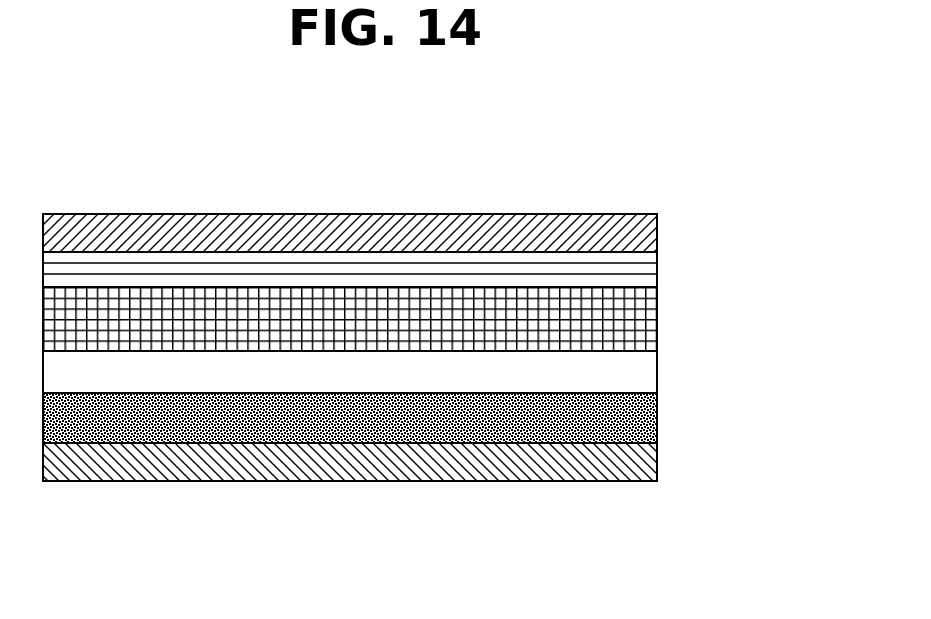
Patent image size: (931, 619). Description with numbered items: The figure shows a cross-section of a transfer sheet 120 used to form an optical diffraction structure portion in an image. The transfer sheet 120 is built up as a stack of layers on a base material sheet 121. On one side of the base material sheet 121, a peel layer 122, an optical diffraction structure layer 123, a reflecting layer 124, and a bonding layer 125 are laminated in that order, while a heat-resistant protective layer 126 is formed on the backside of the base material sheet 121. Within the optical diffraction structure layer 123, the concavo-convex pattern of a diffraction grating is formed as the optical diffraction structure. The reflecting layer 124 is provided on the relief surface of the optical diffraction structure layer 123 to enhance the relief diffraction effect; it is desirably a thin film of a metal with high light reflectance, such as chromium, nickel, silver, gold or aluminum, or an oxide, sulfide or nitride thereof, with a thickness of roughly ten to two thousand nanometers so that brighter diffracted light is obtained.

The transfer sheet 120 is at (111, 160).
The base material sheet 121 is at (657, 423).
The peel layer 122 is at (657, 368).
The optical diffraction structure layer 123 is at (657, 322).
The reflecting layer 124 is at (657, 267).
The bonding layer 125 is at (552, 214).
The heat-resistant protective layer 126 is at (601, 481).